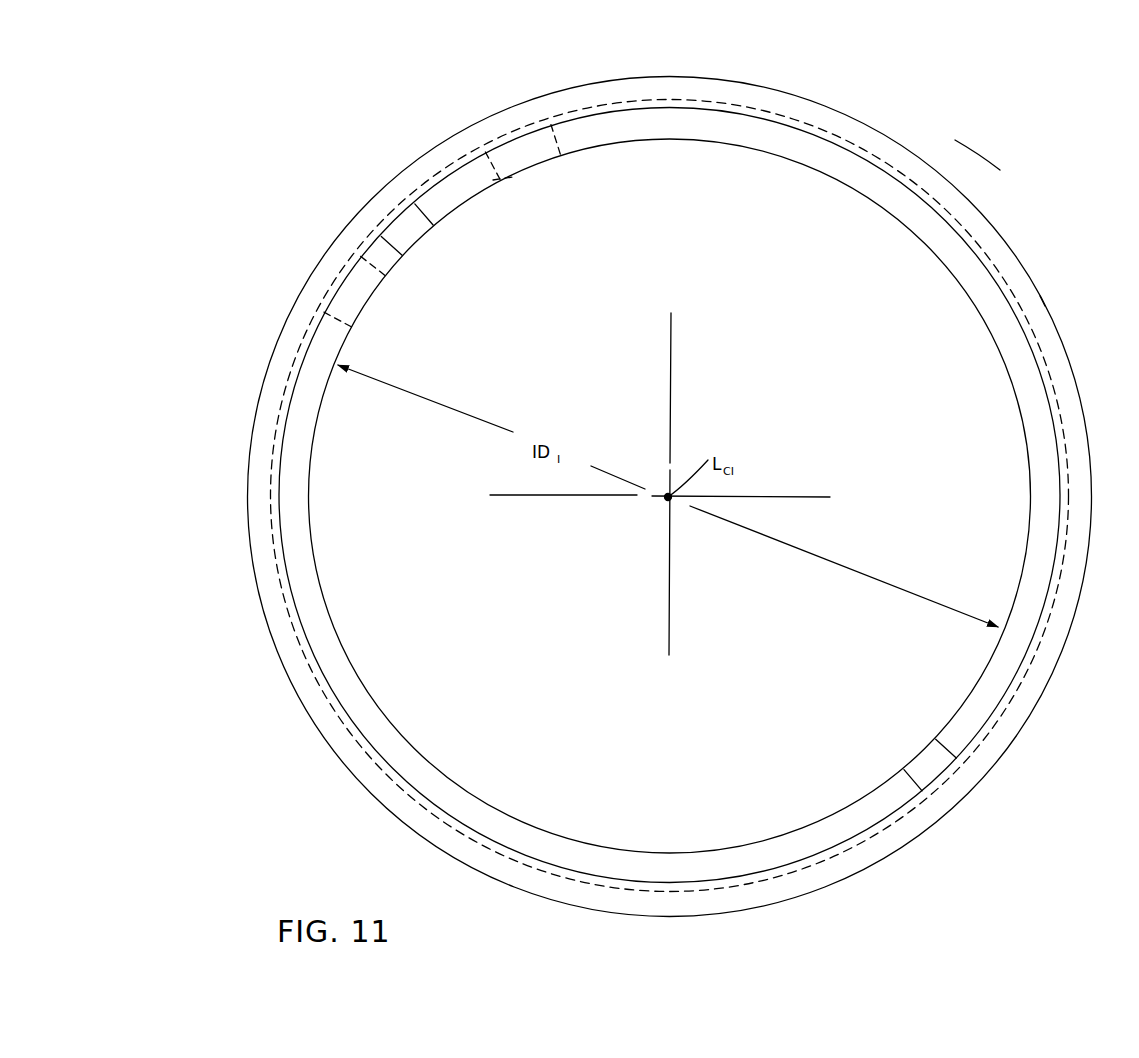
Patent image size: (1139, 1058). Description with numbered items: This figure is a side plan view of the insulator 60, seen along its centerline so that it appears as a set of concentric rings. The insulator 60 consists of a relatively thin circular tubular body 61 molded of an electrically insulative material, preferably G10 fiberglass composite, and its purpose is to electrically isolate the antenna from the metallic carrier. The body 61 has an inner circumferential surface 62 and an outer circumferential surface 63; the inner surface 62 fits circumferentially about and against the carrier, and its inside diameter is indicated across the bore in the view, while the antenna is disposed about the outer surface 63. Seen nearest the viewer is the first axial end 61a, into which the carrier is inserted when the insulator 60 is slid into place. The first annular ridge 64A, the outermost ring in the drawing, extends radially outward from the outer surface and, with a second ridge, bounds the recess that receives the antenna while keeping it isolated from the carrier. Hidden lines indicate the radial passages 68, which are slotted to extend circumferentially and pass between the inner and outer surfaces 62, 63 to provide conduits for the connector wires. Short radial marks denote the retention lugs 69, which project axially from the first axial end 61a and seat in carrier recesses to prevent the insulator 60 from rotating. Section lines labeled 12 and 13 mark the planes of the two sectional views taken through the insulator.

The insulator 60 is at (310, 126).
The tubular body 61 is at (1042, 698).
The first axial end 61a is at (880, 193).
The inner circumferential surface 62 is at (310, 447).
The outer circumferential surface 63 is at (286, 427).
The first annular ridge 64A is at (1044, 306).
The radial passage 68 is at (353, 304).
The retention lug 69 is at (412, 235).
The section line 12- 12 is at (865, 115).
The section line 13- 13 is at (516, 140).